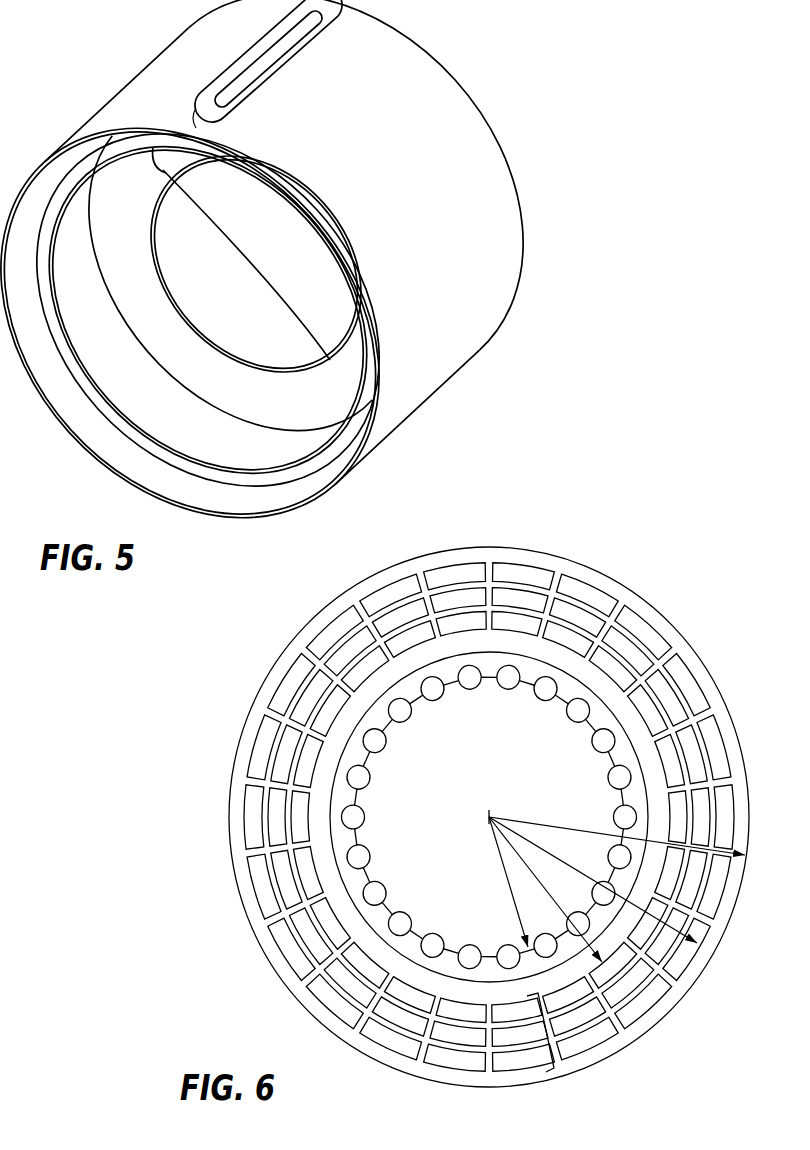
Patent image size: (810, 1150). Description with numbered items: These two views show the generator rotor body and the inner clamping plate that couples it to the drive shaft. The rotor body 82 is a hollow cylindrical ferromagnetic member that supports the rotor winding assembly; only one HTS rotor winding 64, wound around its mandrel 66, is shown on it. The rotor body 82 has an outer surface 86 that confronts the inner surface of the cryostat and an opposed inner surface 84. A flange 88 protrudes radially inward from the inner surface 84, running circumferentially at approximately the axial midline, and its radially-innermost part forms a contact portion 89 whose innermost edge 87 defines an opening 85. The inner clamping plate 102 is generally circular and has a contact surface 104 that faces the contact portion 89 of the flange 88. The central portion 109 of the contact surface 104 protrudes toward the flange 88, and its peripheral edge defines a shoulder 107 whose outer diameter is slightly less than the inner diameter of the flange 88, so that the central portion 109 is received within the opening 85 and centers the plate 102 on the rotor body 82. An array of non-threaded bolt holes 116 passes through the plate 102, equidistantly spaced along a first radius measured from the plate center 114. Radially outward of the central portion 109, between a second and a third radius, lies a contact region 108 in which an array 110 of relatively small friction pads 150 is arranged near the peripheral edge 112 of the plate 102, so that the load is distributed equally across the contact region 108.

In FIG. 5, the rotor windings 64 is at (233, 72).
In FIG. 5, the mandrel 66 is at (267, 27).
In FIG. 5, the rotor body 82 is at (261, 268).
In FIG. 5, the inner surface 84 is at (97, 443).
In FIG. 5, the opening 85 is at (281, 294).
In FIG. 5, the outer surface 86 is at (462, 322).
In FIG. 5, the innermost edge 87 is at (160, 275).
In FIG. 5, the flange 88 is at (256, 264).
In FIG. 5, the contact portion 89 is at (166, 171).
In FIG. 6, the inner clamping plate 102 is at (452, 806).
In FIG. 6, the contact surface 104 is at (489, 806).
In FIG. 6, the shoulder 107 is at (333, 860).
In FIG. 6, the contact region 108 is at (556, 1030).
In FIG. 6, the central portion 109 is at (531, 740).
In FIG. 6, the array 110 is at (242, 818).
In FIG. 6, the peripheral edge 112 is at (453, 817).
In FIG. 6, the plate center 114 is at (488, 816).
In FIG. 6, the bolt holes 116 is at (404, 914).
In FIG. 6, the friction pads 150 is at (469, 806).